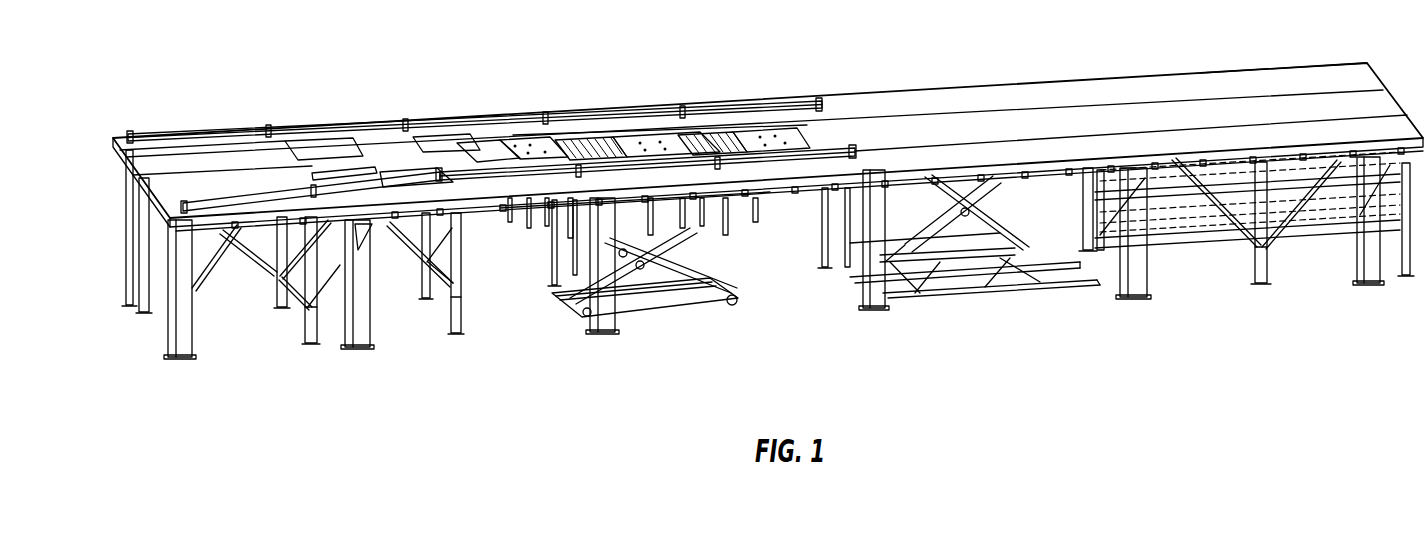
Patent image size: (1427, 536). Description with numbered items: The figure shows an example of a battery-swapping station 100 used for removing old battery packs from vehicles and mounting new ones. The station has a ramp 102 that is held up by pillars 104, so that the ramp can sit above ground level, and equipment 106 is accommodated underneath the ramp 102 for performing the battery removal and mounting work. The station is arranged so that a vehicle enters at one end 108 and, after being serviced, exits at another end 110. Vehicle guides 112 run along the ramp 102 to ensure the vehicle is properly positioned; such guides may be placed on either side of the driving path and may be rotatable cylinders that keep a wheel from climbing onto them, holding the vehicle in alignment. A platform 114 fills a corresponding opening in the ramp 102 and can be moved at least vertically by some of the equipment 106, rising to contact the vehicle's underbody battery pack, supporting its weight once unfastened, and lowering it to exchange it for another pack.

The battery-swapping station 100 is at (768, 207).
The ramp 102 is at (930, 97).
The pillars 104 is at (193, 345).
The equipment 106 is at (702, 316).
The one end 108 is at (145, 152).
The another end 110 is at (1385, 105).
The vehicle guides 112 is at (363, 130).
The platform 114 is at (747, 137).